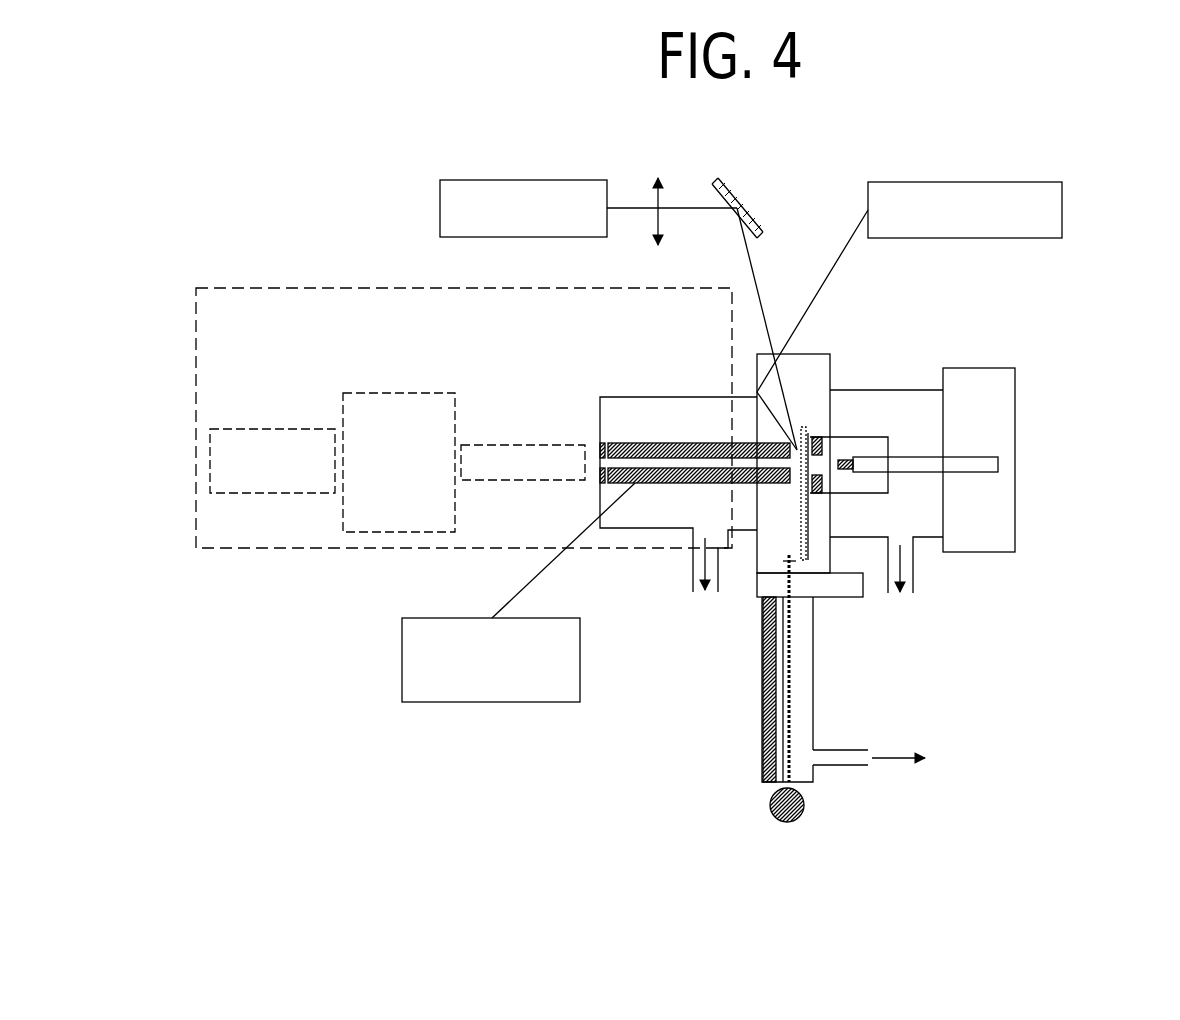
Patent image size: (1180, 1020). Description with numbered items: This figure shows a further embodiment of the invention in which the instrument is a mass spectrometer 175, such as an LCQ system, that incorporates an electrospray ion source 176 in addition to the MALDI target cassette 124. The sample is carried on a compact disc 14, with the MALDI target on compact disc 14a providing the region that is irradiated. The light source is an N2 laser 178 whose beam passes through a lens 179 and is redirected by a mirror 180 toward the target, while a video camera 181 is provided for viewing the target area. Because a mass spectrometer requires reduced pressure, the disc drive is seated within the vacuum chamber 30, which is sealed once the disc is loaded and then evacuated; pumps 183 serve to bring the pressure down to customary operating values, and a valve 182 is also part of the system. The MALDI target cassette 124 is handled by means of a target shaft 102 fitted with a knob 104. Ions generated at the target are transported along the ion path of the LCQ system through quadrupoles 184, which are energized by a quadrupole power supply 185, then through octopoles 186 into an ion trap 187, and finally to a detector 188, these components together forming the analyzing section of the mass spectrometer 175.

The N2 laser 178 is at (519, 180).
The lens 179 is at (660, 189).
The mirror 180 is at (735, 193).
The video camera 181 is at (1062, 207).
The mass spectrometer 175 is at (341, 288).
The detector 188 is at (258, 440).
The ion trap 187 is at (397, 400).
The octopoles 186 is at (532, 460).
The quadrupoles 184 is at (650, 412).
The quadrupole power supply 185 is at (472, 680).
The compact disc 14 is at (809, 433).
The MALDI target on compact disc 14a is at (808, 422).
The electrospray ion source 176 is at (1015, 463).
The valve 182 is at (848, 598).
The X/L min pumps 183 is at (710, 592).
The MALDI target cassette 124 is at (869, 741).
The vacuum chamber 30 is at (752, 743).
The target shaft 102 is at (785, 762).
The knob 104 is at (793, 823).